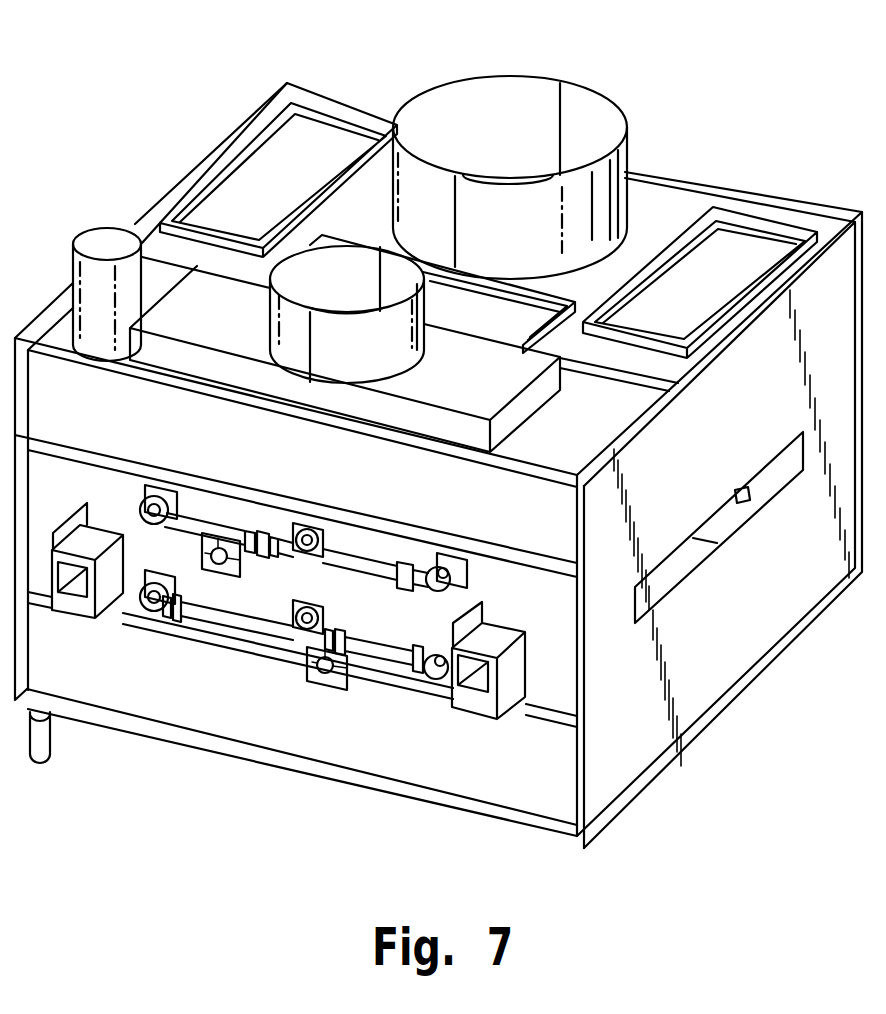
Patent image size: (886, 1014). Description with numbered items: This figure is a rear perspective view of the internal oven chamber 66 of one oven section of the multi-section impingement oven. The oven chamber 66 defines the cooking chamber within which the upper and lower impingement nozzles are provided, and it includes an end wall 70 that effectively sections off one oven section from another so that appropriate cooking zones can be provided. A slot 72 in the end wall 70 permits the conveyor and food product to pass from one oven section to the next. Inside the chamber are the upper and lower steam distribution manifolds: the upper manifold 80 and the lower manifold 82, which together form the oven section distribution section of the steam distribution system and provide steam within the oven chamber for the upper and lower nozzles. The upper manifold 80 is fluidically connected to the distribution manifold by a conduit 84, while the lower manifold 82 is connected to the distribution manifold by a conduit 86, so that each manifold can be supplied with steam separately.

The oven chamber 66 is at (193, 710).
The end wall 70 is at (700, 695).
The slot 72 is at (742, 490).
The upper manifold 80 is at (330, 570).
The lower manifold 82 is at (360, 650).
The conduit 84 is at (218, 578).
The conduit 86 is at (323, 676).